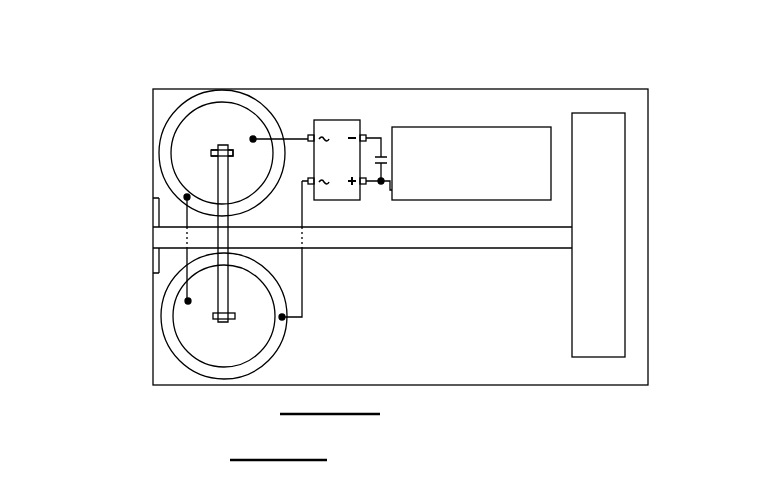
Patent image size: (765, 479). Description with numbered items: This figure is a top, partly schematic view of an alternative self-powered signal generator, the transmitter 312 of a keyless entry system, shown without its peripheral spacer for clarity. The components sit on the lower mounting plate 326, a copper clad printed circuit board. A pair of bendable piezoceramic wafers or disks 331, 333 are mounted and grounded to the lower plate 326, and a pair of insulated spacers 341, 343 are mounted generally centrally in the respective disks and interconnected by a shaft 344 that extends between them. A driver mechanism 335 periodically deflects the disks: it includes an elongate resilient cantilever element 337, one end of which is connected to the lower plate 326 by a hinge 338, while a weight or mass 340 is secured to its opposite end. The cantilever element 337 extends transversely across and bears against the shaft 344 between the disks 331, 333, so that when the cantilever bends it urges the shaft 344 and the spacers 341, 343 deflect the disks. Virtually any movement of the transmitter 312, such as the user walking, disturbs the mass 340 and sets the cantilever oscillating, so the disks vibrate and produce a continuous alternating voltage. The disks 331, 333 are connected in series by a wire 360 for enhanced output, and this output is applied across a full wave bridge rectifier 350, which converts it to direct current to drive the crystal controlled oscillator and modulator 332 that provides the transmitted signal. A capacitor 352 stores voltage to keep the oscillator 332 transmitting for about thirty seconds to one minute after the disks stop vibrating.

The transmitter 312 is at (127, 117).
The lower mounting plate 326 is at (590, 95).
The piezoceramic wafer or disk 331 is at (200, 120).
The crystal controlled oscillator and modulator 332 is at (478, 127).
The piezoceramic wafer or disk 333 is at (193, 338).
The driver mechanism 335 is at (332, 278).
The cantilever element 337 is at (451, 242).
The hinge 338 is at (158, 262).
The weight or mass 340 is at (607, 309).
The insulated spacer 341 is at (234, 145).
The insulated spacer 343 is at (213, 317).
The shaft 344 is at (222, 178).
The full wave bridge rectifier 350 is at (340, 122).
The capacitor 352 is at (381, 155).
The wire 360 is at (222, 253).